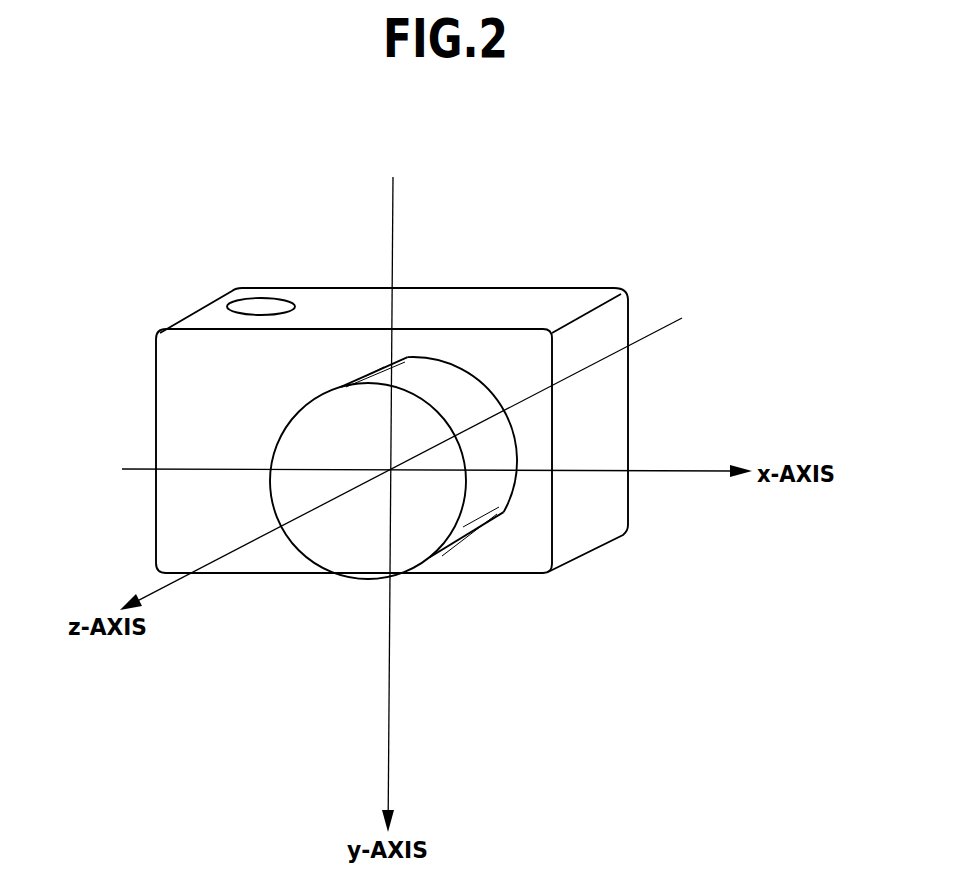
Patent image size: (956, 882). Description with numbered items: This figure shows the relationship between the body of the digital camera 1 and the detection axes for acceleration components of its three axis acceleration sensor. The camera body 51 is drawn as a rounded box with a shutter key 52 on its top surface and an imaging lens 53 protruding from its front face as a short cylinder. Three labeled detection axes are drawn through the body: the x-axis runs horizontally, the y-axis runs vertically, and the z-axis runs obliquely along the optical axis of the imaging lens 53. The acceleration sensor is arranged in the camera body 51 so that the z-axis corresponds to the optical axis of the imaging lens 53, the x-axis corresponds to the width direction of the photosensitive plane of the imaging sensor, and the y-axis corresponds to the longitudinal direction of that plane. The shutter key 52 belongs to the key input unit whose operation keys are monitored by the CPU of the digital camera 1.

The digital camera 1 is at (596, 157).
The camera body 51 is at (532, 308).
The shutter key 52 is at (262, 305).
The imaging lens 53 is at (418, 540).